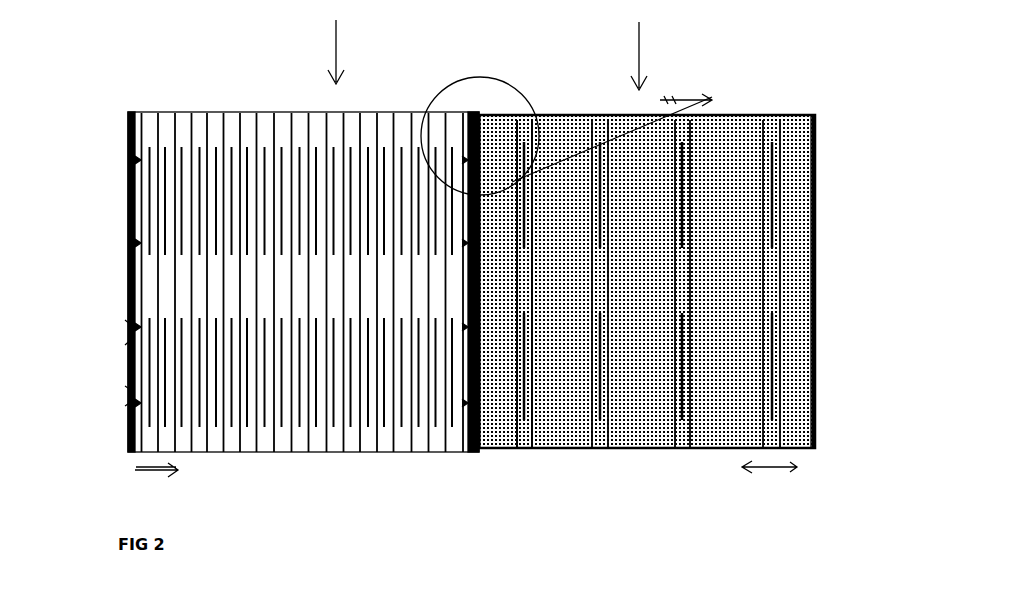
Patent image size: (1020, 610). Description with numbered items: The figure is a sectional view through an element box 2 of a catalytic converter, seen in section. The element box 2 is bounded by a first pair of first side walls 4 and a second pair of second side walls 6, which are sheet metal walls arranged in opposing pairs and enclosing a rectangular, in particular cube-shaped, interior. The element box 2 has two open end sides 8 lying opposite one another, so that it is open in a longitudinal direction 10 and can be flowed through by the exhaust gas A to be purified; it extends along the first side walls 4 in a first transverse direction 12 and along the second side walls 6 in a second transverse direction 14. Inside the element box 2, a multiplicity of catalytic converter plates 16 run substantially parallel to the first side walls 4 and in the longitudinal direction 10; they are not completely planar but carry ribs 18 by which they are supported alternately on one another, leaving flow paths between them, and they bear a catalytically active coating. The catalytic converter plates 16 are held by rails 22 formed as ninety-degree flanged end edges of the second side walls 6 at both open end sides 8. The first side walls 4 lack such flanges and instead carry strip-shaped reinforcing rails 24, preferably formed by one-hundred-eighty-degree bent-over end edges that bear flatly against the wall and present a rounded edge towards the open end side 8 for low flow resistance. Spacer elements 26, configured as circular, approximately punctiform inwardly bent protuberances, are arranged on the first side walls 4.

The element box 2 is at (462, 342).
The first side walls 4 is at (127, 287).
The second side walls 6 is at (820, 205).
The open end sides 8 is at (290, 102).
The longitudinal direction 10 is at (677, 40).
The first transverse direction 12 is at (768, 468).
The second transverse direction 14 is at (152, 472).
The catalytic converter plates 16 is at (383, 450).
The ribs 18 is at (525, 450).
The rails 22 is at (482, 113).
The reinforcing rails 24 is at (140, 110).
The spacer elements 26 is at (125, 388).